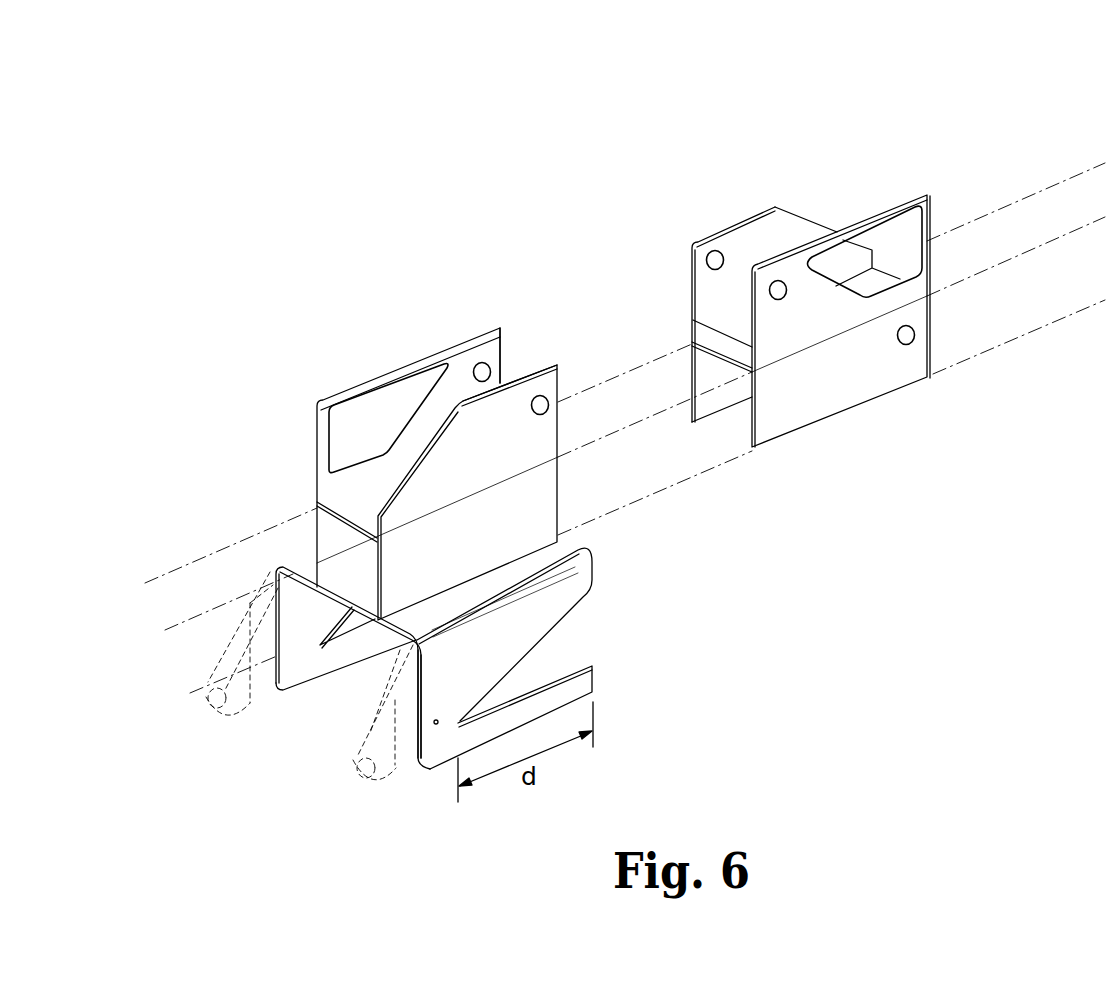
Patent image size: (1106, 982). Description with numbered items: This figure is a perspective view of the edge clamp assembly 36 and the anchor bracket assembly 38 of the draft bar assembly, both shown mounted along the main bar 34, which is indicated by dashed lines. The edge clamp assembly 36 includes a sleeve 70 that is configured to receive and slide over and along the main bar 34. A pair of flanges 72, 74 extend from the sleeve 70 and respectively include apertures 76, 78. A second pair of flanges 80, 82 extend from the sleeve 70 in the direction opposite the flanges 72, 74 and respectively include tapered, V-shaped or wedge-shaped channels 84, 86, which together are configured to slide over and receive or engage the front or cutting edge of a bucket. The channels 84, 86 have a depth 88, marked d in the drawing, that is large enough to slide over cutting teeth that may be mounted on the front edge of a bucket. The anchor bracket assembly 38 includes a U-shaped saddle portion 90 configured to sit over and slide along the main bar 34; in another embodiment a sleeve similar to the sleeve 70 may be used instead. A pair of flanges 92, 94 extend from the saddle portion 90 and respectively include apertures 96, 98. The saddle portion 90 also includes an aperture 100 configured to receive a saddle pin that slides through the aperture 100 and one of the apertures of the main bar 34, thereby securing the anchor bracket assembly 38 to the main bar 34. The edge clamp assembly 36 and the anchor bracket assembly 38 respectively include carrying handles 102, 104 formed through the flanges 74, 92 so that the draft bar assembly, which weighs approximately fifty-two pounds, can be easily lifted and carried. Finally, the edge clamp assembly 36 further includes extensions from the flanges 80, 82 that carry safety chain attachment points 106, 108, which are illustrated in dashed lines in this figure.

The main bar 34 is at (241, 543).
The edge clamp assembly 36 is at (348, 326).
The anchor bracket assembly 38 is at (855, 92).
The sleeve 70 is at (556, 498).
The flange 72 is at (553, 372).
The flange 74 is at (480, 350).
The aperture 76 is at (544, 403).
The aperture 78 is at (487, 372).
The flange 80 is at (438, 730).
The flange 82 is at (291, 680).
The channel 84 is at (578, 614).
The channel 86 is at (352, 636).
The depth 88 is at (556, 748).
The U-shaped saddle portion 90 is at (832, 395).
The flange 92 is at (873, 214).
The flange 94 is at (760, 233).
The aperture 96 is at (784, 292).
The aperture 98 is at (712, 252).
The aperture 100 is at (912, 338).
The carrying handle 102 is at (388, 402).
The carrying handle 104 is at (905, 232).
The safety chain attachment point 106 is at (373, 770).
The safety chain attachment point 108 is at (228, 693).